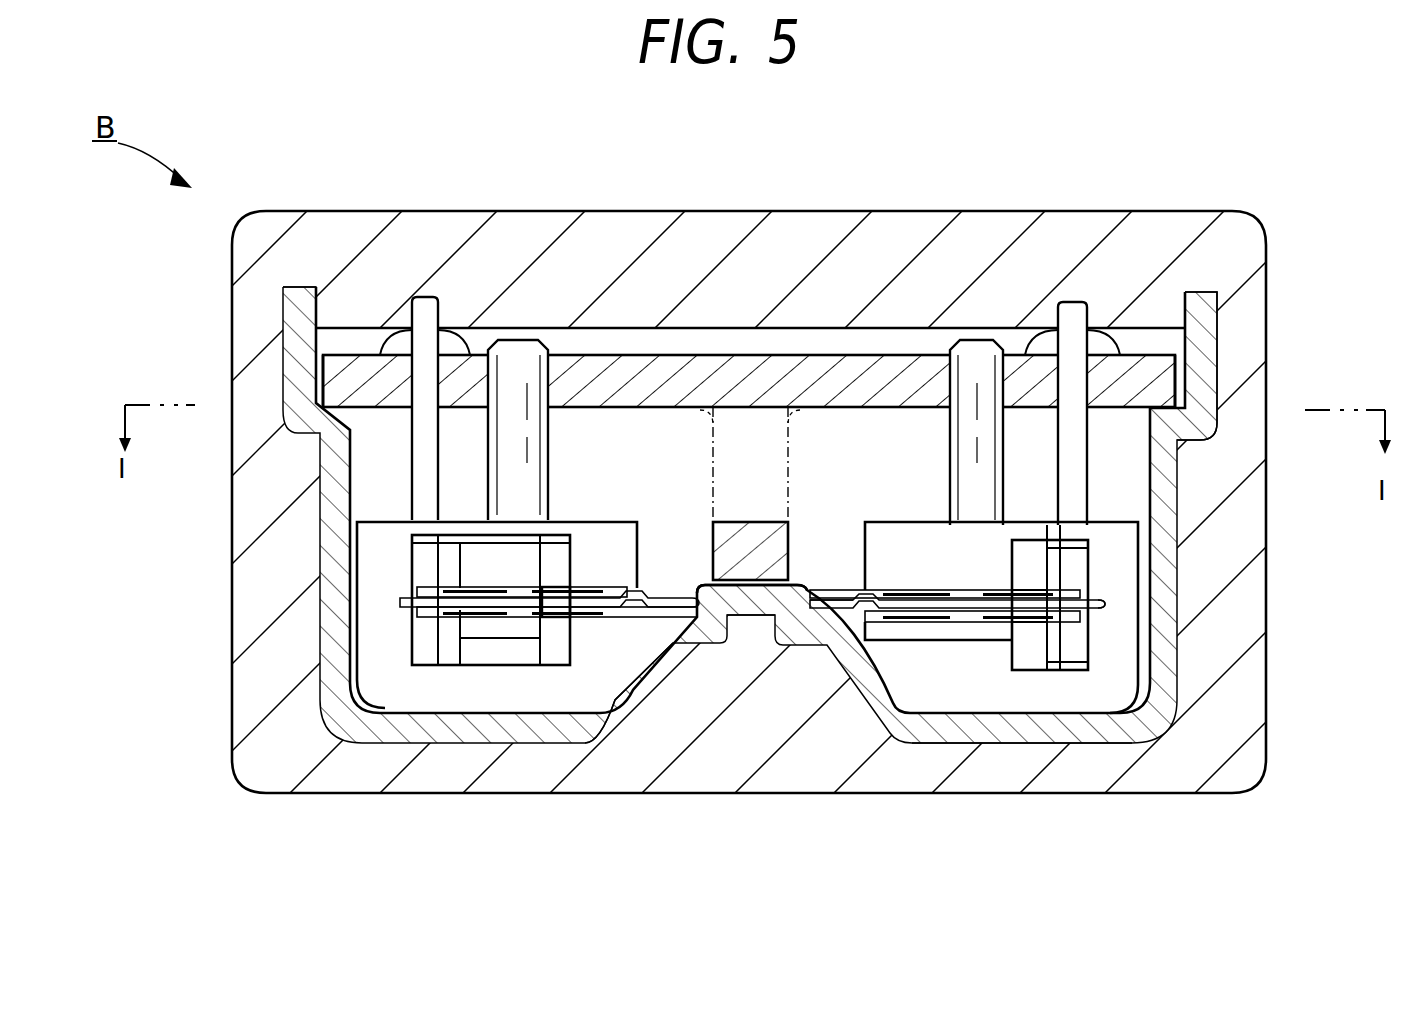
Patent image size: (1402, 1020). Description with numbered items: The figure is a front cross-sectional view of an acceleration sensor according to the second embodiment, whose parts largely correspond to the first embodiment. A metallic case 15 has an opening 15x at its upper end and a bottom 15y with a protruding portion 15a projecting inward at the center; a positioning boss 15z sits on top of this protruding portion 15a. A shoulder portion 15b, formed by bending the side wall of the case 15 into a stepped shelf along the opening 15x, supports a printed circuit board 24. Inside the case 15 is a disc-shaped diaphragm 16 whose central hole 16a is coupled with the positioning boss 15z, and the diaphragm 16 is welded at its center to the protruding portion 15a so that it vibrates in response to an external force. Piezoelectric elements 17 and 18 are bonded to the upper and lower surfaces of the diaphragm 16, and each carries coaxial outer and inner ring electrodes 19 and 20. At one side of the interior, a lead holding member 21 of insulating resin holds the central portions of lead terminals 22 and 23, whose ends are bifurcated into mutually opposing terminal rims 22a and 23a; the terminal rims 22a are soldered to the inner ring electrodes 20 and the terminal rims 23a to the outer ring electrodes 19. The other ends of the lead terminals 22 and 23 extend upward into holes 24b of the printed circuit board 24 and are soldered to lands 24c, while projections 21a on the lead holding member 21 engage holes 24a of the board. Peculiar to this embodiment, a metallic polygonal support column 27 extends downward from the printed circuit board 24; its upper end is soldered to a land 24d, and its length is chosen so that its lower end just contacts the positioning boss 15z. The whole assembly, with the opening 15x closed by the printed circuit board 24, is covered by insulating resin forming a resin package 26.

The metallic case 15 is at (1168, 540).
The protruding portion 15a is at (688, 640).
The shoulder portion 15b is at (300, 420).
The opening 15x is at (1180, 300).
The bottom 15y is at (1003, 745).
The positioning boss 15z is at (748, 622).
The diaphragm 16 is at (1105, 604).
The hole 16a is at (822, 552).
The piezoelectric element 17 is at (523, 580).
The piezoelectric element 18 is at (490, 666).
The outer ring electrode 19 is at (470, 592).
The inner ring electrode 20 is at (615, 586).
The lead holding member 21 is at (675, 545).
The projection 21a is at (525, 345).
The lead terminal 22 is at (415, 480).
The terminal rim 22a is at (425, 540).
The lead terminal 23 is at (1075, 478).
The terminal rim 23a is at (1082, 560).
The printed circuit board 24 is at (680, 372).
The hole 24a is at (445, 332).
The hole 24b is at (382, 360).
The land 24c is at (405, 348).
The land 24d is at (820, 410).
The resin package 26 is at (1165, 232).
The support column 27 is at (762, 490).